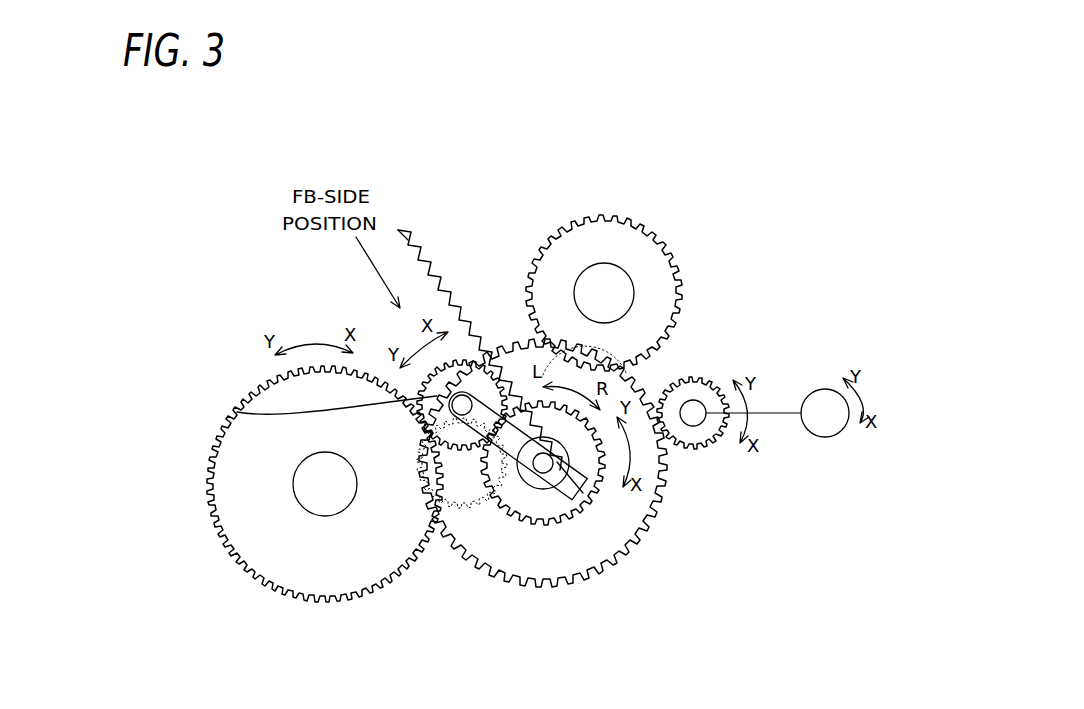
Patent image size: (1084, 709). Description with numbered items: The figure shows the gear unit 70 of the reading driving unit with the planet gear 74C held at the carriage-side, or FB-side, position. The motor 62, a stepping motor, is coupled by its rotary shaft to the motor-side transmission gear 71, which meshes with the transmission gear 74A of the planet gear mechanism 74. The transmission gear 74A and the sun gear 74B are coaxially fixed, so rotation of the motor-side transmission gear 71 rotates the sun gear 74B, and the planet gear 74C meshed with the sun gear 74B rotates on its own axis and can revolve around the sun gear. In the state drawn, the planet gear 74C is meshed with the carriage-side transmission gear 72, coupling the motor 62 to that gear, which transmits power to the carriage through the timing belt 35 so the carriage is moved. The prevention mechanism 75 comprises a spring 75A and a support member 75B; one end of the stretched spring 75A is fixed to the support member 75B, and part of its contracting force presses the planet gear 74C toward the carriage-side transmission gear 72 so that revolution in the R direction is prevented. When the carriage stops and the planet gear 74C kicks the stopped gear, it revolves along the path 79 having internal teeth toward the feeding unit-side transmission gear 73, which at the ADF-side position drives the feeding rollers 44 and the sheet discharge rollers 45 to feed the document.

The gear unit 70 is at (345, 124).
The carriage-side transmission gear 72 is at (269, 454).
The timing belt 35 is at (322, 484).
The planet gear 74C is at (237, 412).
The planet gear mechanism 74 is at (597, 503).
The transmission gear 74A is at (660, 483).
The sun gear 74B is at (600, 486).
The path 79 is at (440, 363).
The prevention mechanism 75 is at (419, 215).
The spring 75A is at (408, 240).
The support member 75B is at (507, 440).
The feeding unit-side transmission gear 73 is at (666, 255).
The feeding rollers 44 is at (690, 293).
The sheet discharge rollers 45 is at (634, 292).
The motor-side transmission gear 71 is at (705, 378).
The motor 62 is at (830, 387).